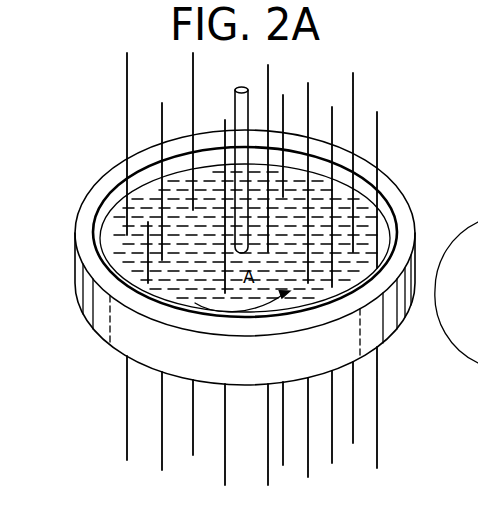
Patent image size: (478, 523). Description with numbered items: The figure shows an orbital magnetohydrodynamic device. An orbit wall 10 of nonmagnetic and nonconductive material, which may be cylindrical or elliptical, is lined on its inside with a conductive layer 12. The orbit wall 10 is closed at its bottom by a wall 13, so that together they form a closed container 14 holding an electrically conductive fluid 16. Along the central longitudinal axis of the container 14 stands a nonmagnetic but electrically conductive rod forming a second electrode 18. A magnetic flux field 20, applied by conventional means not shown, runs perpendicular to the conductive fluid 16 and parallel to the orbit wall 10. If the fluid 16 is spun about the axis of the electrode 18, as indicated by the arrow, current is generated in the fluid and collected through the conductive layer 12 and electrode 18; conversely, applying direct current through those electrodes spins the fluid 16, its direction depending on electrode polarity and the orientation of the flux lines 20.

The orbit wall 10 is at (77, 333).
The conductive layer 12 is at (114, 167).
The bottom wall 13 is at (383, 246).
The closed container 14 is at (160, 287).
The electrically conductive fluid 16 is at (187, 223).
The second electrode 18 is at (233, 109).
The magnetic flux field 20 is at (390, 430).